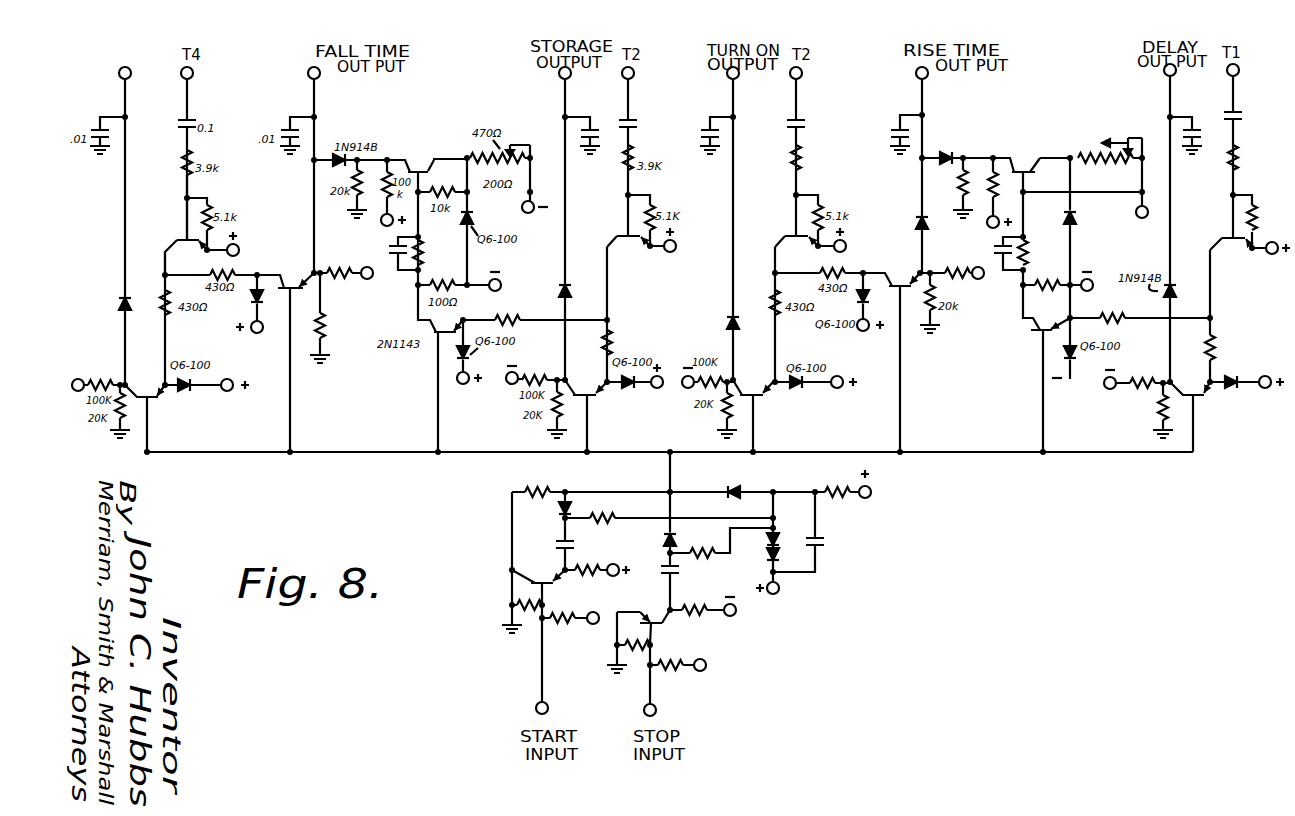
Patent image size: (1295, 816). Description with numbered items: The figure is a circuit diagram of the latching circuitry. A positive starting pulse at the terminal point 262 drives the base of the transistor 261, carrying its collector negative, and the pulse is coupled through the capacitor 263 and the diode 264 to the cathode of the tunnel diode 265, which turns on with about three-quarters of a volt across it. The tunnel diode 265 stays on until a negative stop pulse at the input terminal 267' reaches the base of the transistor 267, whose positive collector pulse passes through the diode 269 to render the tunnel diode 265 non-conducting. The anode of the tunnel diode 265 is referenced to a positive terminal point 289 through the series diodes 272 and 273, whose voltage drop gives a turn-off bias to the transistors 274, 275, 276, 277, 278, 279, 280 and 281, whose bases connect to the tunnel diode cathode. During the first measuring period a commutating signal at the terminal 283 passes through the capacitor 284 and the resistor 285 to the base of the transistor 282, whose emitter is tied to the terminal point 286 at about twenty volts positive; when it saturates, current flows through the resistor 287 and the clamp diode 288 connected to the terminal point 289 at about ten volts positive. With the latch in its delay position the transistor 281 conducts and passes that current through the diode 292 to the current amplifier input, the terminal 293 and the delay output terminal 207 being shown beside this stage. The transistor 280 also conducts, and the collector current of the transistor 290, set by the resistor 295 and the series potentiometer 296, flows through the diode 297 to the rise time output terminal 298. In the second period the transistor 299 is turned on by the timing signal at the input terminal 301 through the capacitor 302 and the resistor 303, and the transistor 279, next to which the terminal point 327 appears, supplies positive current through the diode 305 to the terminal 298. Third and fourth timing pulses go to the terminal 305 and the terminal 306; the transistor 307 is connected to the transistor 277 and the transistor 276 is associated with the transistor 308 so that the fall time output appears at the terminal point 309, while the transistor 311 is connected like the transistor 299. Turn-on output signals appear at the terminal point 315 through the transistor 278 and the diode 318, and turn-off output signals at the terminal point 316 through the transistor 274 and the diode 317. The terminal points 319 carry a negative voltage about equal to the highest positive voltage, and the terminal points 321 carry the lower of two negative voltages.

The delay output terminal 207 is at (1163, 75).
The transistor 261 is at (547, 567).
The terminal point 262 is at (548, 708).
The capacitor 263 is at (577, 546).
The diode 264 is at (572, 508).
The tunnel diode 265 is at (738, 489).
The transistor 267 is at (677, 627).
The input terminal 267' is at (677, 708).
The diode 269 is at (664, 544).
The diode 272 is at (778, 538).
The diode 273 is at (781, 555).
The transistor 274 is at (152, 406).
The transistor 275 is at (295, 272).
The transistor 276 is at (437, 315).
The transistor 277 is at (592, 399).
The transistor 278 is at (773, 397).
The transistor 279 is at (903, 276).
The transistor 280 is at (1035, 337).
The transistor 281 is at (1200, 404).
The transistor 282 is at (1221, 236).
The terminal 283 is at (1240, 72).
The capacitor 284 is at (1243, 117).
The resistor 285 is at (1240, 162).
The terminal point 286 is at (240, 249).
The resistor 287 is at (1218, 348).
The diode 288 is at (1234, 375).
The terminal point 289 is at (260, 356).
The transistor 290 is at (1024, 162).
The diode 292 is at (1176, 292).
The input terminal 293 is at (1110, 389).
The resistor 295 is at (1093, 148).
The potentiometer 296 is at (1127, 161).
The diode 297 is at (948, 153).
The output terminal 298 is at (928, 80).
The transistor 299 is at (788, 232).
The input terminal 301 is at (802, 73).
The capacitor 302 is at (806, 125).
The resistor 303 is at (803, 160).
The diode 305 is at (633, 80).
The terminal 306 is at (195, 73).
The transistor 307 is at (628, 250).
The transistor 308 is at (416, 158).
The terminal point 309 is at (320, 76).
The transistor 311 is at (178, 238).
The terminal point 315 is at (738, 78).
The terminal point 316 is at (132, 62).
The diode 317 is at (118, 302).
The diode 318 is at (727, 322).
The terminal point 319 is at (1142, 218).
The terminal point 321 is at (78, 379).
The terminal 327 is at (980, 280).